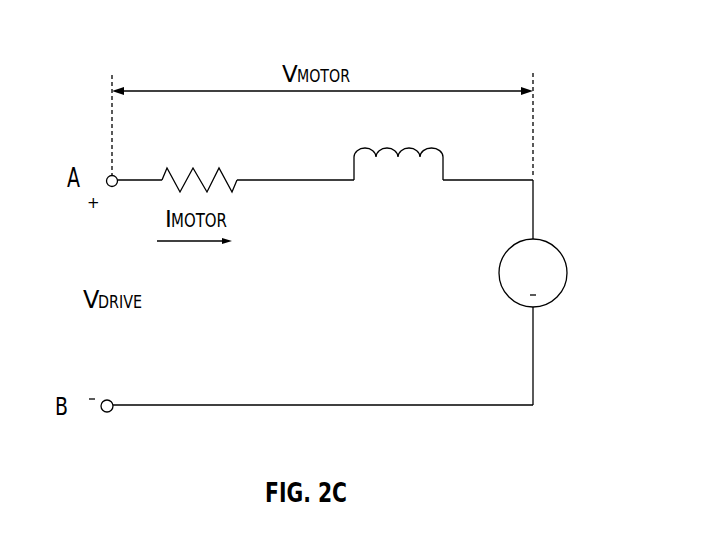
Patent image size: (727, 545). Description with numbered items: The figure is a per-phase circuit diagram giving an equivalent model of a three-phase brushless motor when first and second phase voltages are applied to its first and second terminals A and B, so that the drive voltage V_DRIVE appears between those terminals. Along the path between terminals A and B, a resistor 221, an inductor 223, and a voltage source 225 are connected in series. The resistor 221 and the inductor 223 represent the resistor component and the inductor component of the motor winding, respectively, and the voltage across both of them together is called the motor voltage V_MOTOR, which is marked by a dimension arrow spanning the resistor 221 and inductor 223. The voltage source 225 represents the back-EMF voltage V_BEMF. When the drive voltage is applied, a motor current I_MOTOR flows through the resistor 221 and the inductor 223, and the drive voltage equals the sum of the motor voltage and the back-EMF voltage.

The resistor 221 is at (219, 168).
The inductor 223 is at (434, 150).
The voltage source 225 is at (548, 246).